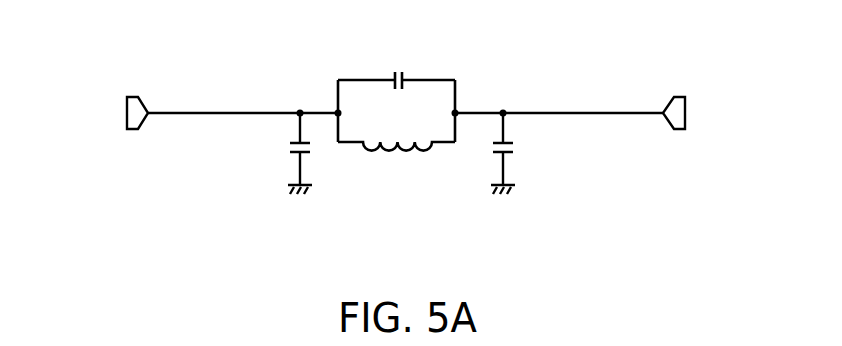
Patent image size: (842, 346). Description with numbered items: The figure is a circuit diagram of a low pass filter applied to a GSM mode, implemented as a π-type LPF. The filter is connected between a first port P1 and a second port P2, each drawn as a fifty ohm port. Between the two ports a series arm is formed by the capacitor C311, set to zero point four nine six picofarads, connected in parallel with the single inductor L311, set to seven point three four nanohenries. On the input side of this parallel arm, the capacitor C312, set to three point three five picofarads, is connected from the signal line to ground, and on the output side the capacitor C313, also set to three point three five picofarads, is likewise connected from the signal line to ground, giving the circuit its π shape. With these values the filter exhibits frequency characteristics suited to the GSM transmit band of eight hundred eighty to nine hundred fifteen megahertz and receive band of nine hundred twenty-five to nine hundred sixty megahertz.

The Port1 (50 Ohm input port) P1 is at (100, 82).
The Port2 (50 Ohm output port) P2 is at (684, 82).
The capacitor C311 is at (400, 47).
The capacitor C312 is at (237, 153).
The capacitor C313 is at (573, 153).
The inductor L311 is at (400, 180).